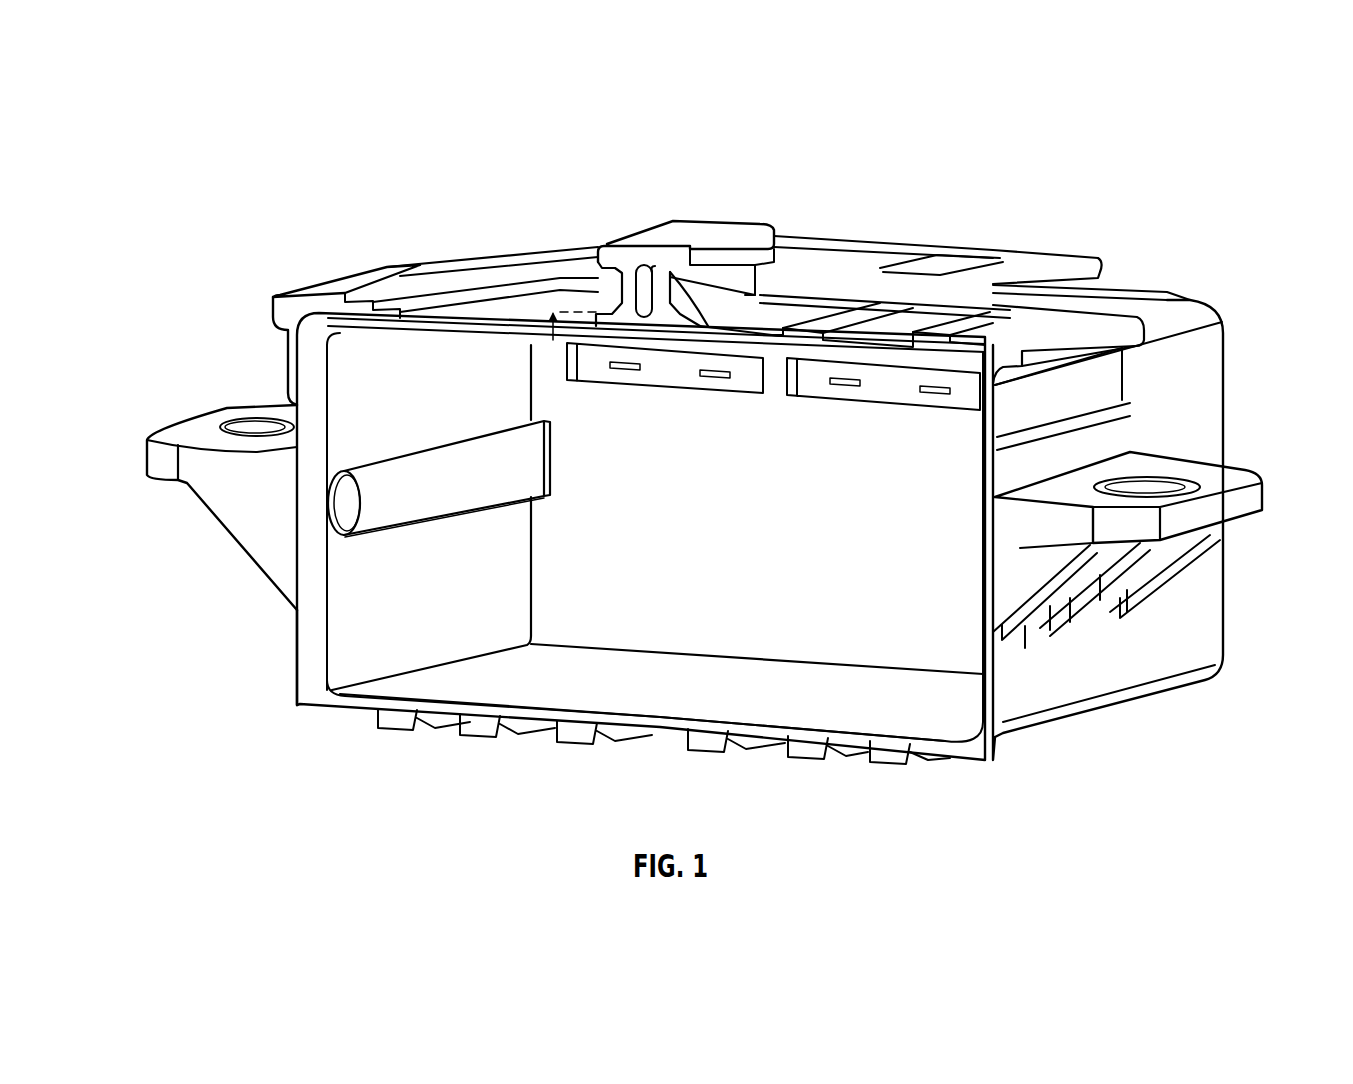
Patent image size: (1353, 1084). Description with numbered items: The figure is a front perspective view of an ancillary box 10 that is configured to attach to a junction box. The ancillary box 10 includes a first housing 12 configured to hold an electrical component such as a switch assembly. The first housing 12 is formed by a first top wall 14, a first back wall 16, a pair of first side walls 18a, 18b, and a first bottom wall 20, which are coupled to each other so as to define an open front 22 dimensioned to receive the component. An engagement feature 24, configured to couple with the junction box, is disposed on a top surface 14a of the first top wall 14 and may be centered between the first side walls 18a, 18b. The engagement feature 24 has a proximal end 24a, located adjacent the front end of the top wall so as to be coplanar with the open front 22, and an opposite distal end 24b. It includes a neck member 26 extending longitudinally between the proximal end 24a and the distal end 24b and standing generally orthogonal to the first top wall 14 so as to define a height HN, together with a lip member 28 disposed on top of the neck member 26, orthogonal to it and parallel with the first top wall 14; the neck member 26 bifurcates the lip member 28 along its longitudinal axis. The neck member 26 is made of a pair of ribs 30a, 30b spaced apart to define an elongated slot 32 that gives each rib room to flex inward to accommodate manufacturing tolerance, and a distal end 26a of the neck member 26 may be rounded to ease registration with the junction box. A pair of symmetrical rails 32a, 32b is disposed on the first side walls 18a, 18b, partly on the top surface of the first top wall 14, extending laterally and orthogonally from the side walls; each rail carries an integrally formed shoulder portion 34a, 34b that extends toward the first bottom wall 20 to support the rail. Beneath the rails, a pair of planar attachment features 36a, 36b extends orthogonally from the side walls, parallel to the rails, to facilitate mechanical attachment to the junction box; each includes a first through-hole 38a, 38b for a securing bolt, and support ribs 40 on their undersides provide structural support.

The ancillary box 10 is at (1178, 152).
The first housing 12 is at (567, 202).
The first top wall 14 is at (900, 335).
The top surface 14a is at (780, 322).
The first back wall 16 is at (933, 638).
The first side wall 18a is at (1193, 640).
The first side wall 18b is at (353, 637).
The first bottom wall 20 is at (533, 690).
The open front 22 is at (350, 393).
The engagement feature 24 is at (640, 257).
The proximal end 24a is at (640, 327).
The distal end 24b is at (707, 227).
The neck member 26 is at (662, 300).
The distal end of the neck member 26a is at (673, 283).
The lip member 28 is at (773, 232).
The rib 30a is at (667, 307).
The rib 30b is at (618, 313).
The elongated slot 32 is at (632, 280).
The first rail 32a is at (1108, 322).
The second rail 32b is at (330, 283).
The shoulder portion 34a is at (1097, 385).
The shoulder portion 34b is at (291, 360).
The first attachment feature 36a is at (1247, 477).
The second attachment feature 36b is at (180, 432).
The first through-hole 38a is at (1160, 483).
The first through-hole 38b is at (243, 425).
The support ribs 40 is at (1167, 567).
The height HN is at (553, 258).